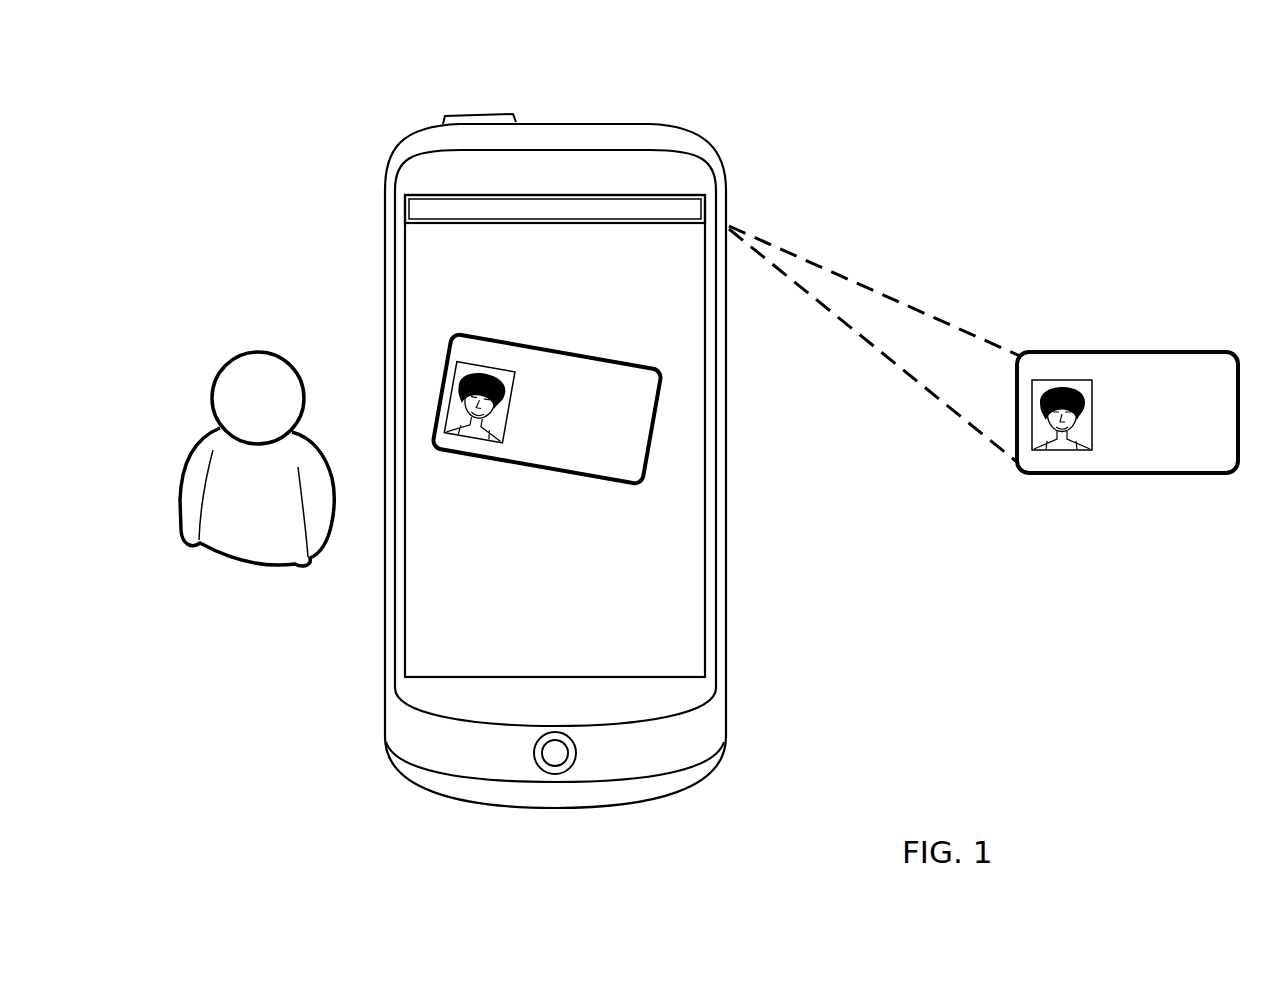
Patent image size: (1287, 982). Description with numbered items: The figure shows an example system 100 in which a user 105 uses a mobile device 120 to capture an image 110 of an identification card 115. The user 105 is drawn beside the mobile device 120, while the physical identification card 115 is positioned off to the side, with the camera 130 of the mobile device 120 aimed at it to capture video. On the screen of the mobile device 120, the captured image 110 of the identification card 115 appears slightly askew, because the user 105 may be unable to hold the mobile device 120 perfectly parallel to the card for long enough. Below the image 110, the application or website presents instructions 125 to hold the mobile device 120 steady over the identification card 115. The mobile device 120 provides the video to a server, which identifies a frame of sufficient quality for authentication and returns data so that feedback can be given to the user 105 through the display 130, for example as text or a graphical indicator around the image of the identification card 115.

The system 100 is at (254, 124).
The user 105 is at (236, 355).
The image 110 is at (671, 373).
The identification card 115 is at (1023, 352).
The mobile device 120 is at (417, 131).
The instructions 125 is at (655, 628).
The camera/display 130 is at (731, 224).